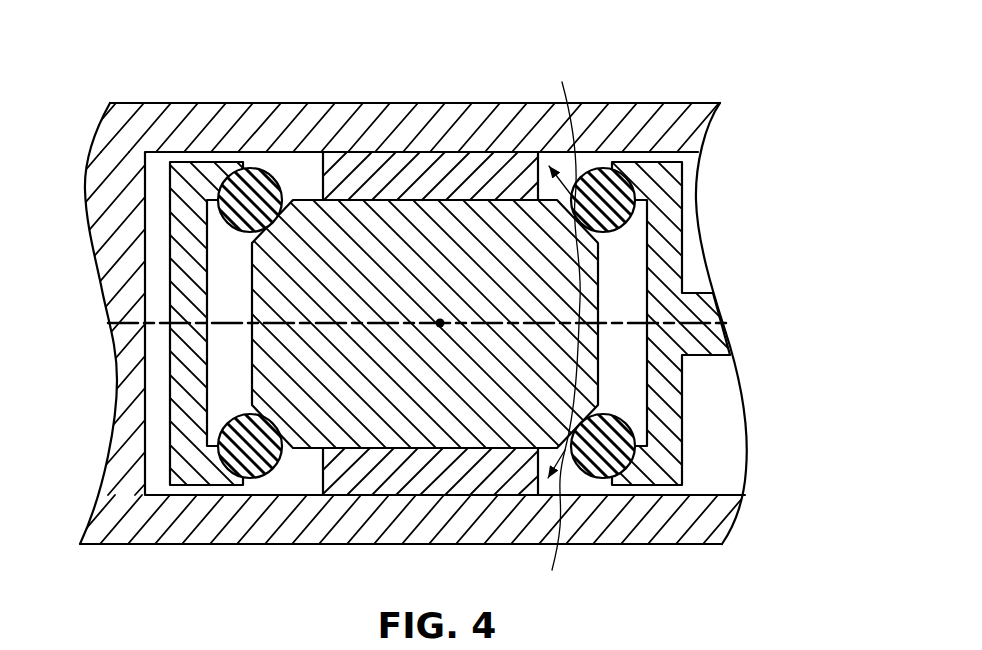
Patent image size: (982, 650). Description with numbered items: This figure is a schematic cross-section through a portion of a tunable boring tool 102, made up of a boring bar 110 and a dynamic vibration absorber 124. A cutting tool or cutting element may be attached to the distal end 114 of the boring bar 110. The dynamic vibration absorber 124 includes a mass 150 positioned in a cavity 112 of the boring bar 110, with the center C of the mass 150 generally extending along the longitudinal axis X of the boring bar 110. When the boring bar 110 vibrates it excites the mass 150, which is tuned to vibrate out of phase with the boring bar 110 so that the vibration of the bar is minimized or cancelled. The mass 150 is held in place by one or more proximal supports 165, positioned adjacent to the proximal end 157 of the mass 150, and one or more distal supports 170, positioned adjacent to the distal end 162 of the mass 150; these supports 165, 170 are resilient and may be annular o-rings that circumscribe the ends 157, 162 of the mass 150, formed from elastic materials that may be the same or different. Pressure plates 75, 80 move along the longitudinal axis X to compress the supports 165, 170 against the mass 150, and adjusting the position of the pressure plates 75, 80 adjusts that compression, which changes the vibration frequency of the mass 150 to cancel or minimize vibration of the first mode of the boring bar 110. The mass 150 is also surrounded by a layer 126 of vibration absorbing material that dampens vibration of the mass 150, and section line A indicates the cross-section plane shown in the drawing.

The tunable boring tool 102 is at (772, 120).
The boring bar 110 is at (683, 110).
The distal end 114 is at (110, 247).
The dynamic vibration absorber 124 is at (712, 173).
The pressure plate 75 is at (668, 218).
The proximal support 165 is at (597, 187).
The distal support 170 is at (248, 173).
The layer of vibration absorbing material 126 is at (411, 190).
The mass 150 is at (411, 298).
The distal end 162 is at (257, 312).
The pressure plate 80 is at (182, 360).
The cavity 112 is at (218, 413).
The proximal end 157 is at (600, 375).
The longitudinal axis X is at (610, 323).
The center C is at (441, 339).
The section line A- A is at (556, 326).